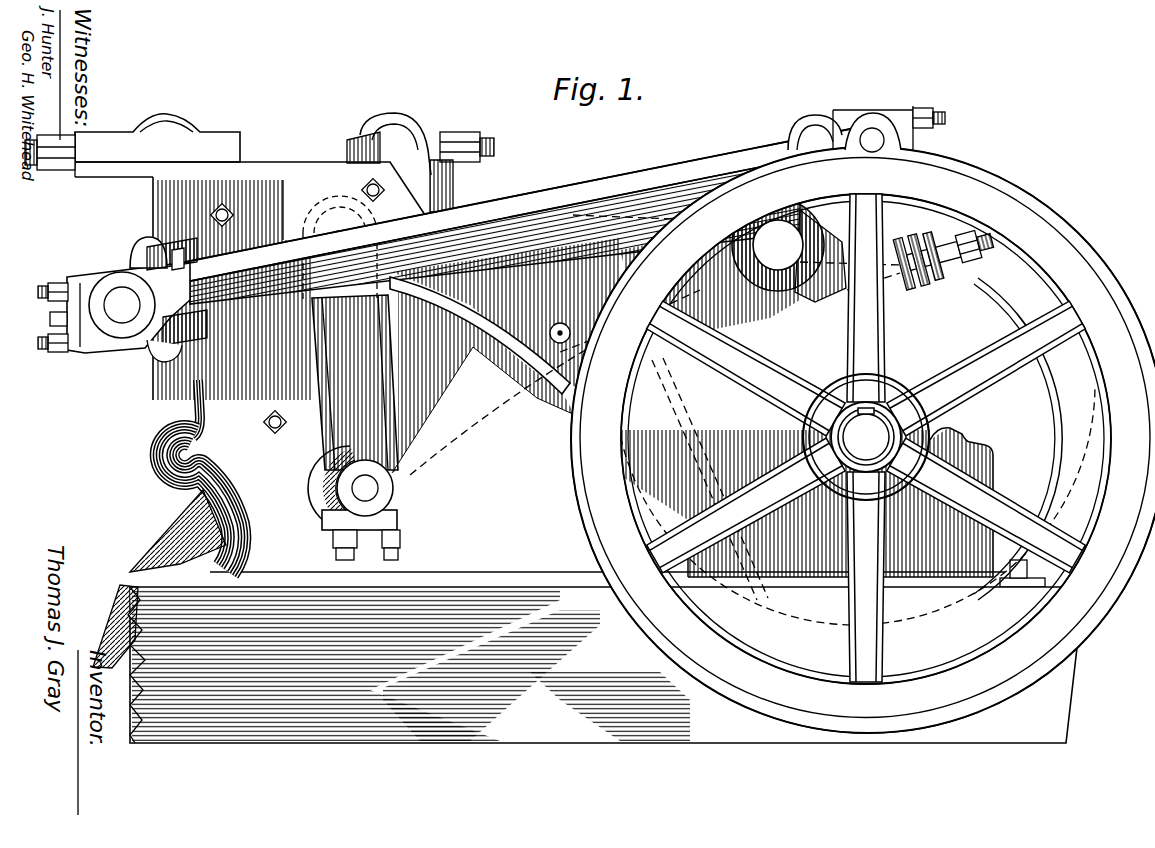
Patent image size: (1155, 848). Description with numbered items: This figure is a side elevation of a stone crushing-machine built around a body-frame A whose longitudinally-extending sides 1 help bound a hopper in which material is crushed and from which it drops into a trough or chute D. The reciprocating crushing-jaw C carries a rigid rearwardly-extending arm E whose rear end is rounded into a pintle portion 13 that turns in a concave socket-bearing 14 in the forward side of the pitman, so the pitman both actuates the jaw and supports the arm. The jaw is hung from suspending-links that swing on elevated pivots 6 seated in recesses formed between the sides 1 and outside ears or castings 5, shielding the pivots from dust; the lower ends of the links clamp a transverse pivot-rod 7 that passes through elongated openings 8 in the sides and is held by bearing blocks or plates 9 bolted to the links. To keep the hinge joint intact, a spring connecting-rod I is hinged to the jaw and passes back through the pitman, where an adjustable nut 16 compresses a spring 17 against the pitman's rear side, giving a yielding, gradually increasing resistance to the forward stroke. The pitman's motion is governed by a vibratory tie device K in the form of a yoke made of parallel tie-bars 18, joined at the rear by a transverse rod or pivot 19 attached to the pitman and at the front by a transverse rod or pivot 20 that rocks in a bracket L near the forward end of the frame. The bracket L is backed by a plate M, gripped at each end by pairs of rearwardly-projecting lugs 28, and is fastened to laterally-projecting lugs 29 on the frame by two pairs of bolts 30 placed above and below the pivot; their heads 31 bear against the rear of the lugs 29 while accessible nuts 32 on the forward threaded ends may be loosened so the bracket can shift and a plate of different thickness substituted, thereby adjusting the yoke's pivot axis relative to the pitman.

The longitudinally-extending sides 1 is at (606, 627).
The ears or castings 5 is at (259, 273).
The pivots 6 is at (340, 248).
The pivot-rod 7 is at (392, 474).
The openings 8 is at (312, 488).
The bearing blocks or plates 9 is at (400, 495).
The pintle portion 13 is at (778, 245).
The concave socket-bearing 14 is at (808, 236).
The adjustable nut 16 is at (968, 240).
The spring 17 is at (910, 240).
The tie-bars 18 is at (623, 185).
The transverse rod or pivot 19 is at (872, 128).
The transverse rod or pivot 20 is at (124, 318).
The rearwardly-projecting lugs 28 is at (162, 356).
The laterally-projecting lug 29 is at (176, 250).
The bolts 30 is at (48, 293).
The heads 31 is at (190, 256).
The nuts 32 is at (50, 272).
The body-frame A is at (599, 382).
The reciprocating crushing-jaw C is at (784, 245).
The trough or chute D is at (164, 524).
The arm E is at (446, 363).
The spring connecting-rod I is at (742, 420).
The vibratory tie device K is at (535, 213).
The bracket L is at (128, 295).
The plate M is at (141, 246).